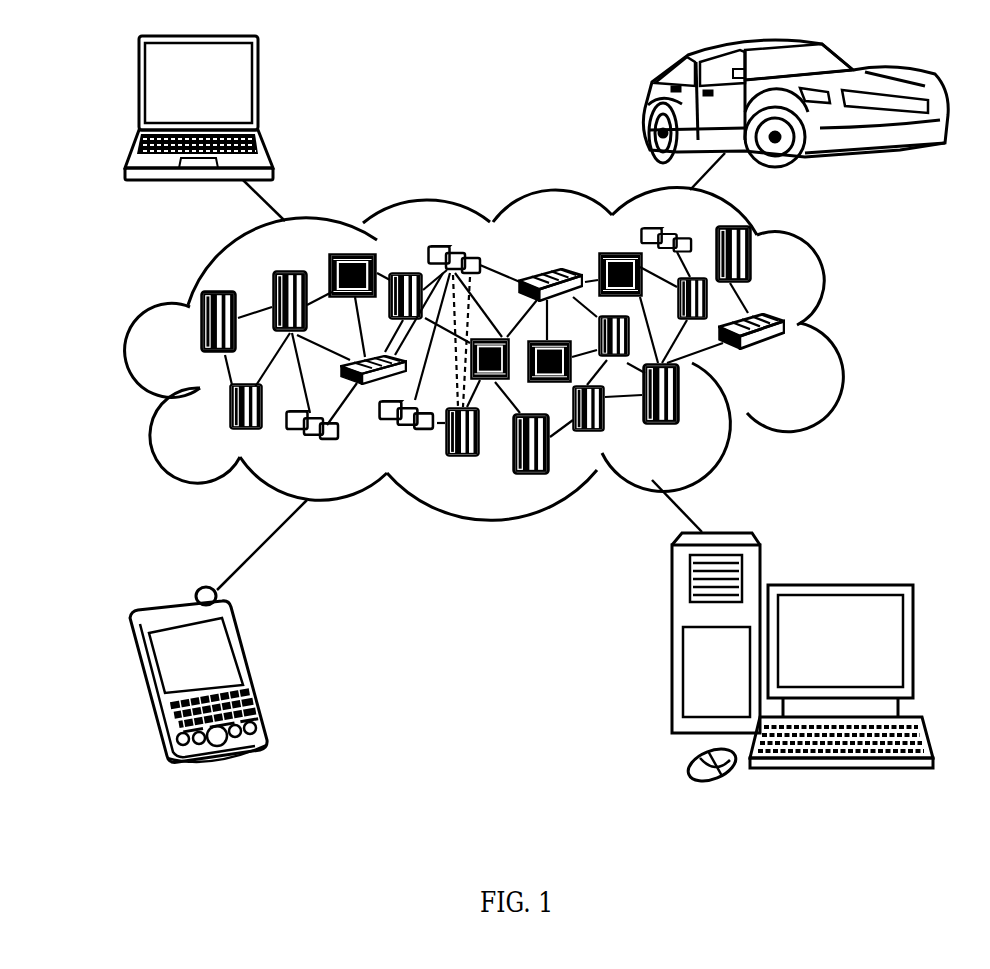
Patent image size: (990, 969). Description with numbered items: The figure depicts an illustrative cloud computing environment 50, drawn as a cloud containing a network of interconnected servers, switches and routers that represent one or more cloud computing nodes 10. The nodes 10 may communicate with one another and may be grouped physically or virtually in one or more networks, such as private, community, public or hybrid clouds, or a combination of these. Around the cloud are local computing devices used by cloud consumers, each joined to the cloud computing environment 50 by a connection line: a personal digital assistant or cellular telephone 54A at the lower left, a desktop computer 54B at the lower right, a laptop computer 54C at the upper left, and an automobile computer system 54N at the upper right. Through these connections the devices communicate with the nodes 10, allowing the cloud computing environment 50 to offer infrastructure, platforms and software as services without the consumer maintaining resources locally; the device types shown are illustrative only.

The cloud computing nodes 10 is at (800, 364).
The cloud computing environment 50 is at (842, 331).
The personal digital assistant (PDA) or cellular telephone 54A is at (253, 663).
The desktop computer 54B is at (838, 585).
The laptop computer 54C is at (258, 90).
The automobile computer system 54N is at (646, 103).